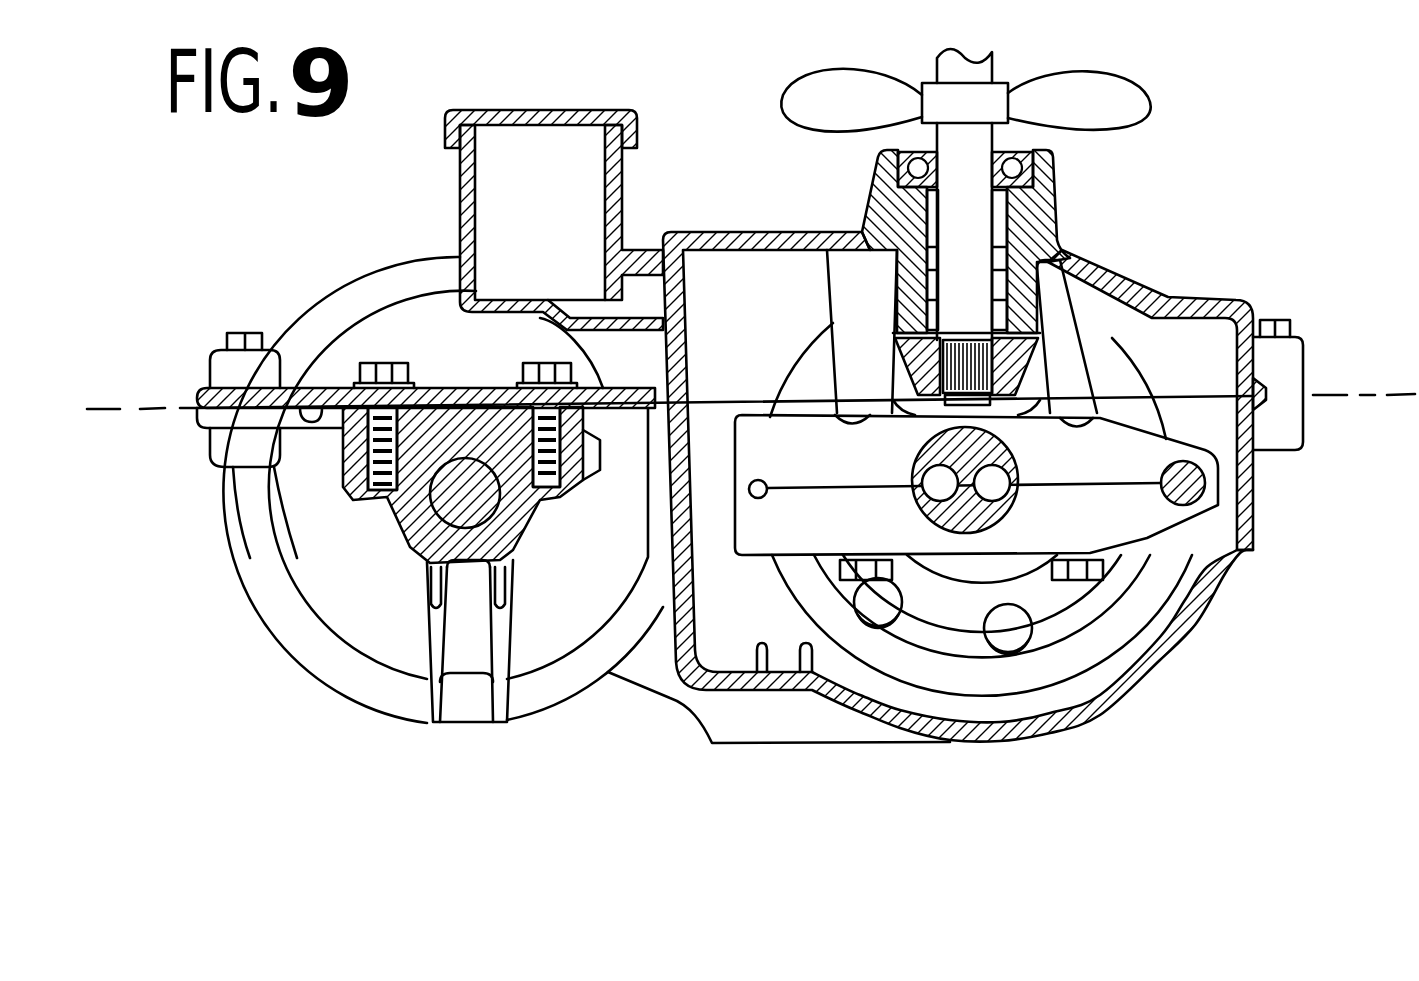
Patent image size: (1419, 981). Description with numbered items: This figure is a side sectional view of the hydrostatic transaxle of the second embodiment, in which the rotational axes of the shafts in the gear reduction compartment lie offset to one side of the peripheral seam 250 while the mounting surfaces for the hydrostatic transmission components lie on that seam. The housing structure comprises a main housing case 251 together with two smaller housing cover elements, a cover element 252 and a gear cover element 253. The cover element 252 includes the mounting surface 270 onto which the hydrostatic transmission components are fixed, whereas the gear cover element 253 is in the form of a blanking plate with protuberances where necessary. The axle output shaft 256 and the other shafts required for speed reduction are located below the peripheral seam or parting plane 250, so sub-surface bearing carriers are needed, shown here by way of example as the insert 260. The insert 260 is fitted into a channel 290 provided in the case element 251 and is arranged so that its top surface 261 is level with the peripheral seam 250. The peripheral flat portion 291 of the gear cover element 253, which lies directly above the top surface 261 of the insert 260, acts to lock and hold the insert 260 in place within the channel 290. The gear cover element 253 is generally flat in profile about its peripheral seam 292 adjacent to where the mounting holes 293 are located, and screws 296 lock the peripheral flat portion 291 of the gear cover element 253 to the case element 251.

The peripheral seam 250 is at (113, 408).
The main housing case 251 is at (272, 553).
The cover element 252 is at (890, 223).
The gear cover element 253 is at (443, 303).
The axle output shaft 256 is at (457, 500).
The insert 260 is at (482, 500).
The top surface 261 is at (443, 490).
The mounting surface 270 is at (833, 428).
The channel 290 is at (545, 450).
The peripheral flat portion 291 is at (227, 398).
The peripheral seam 292 is at (292, 388).
The mounting holes 293 is at (353, 428).
The screws 296 is at (532, 378).